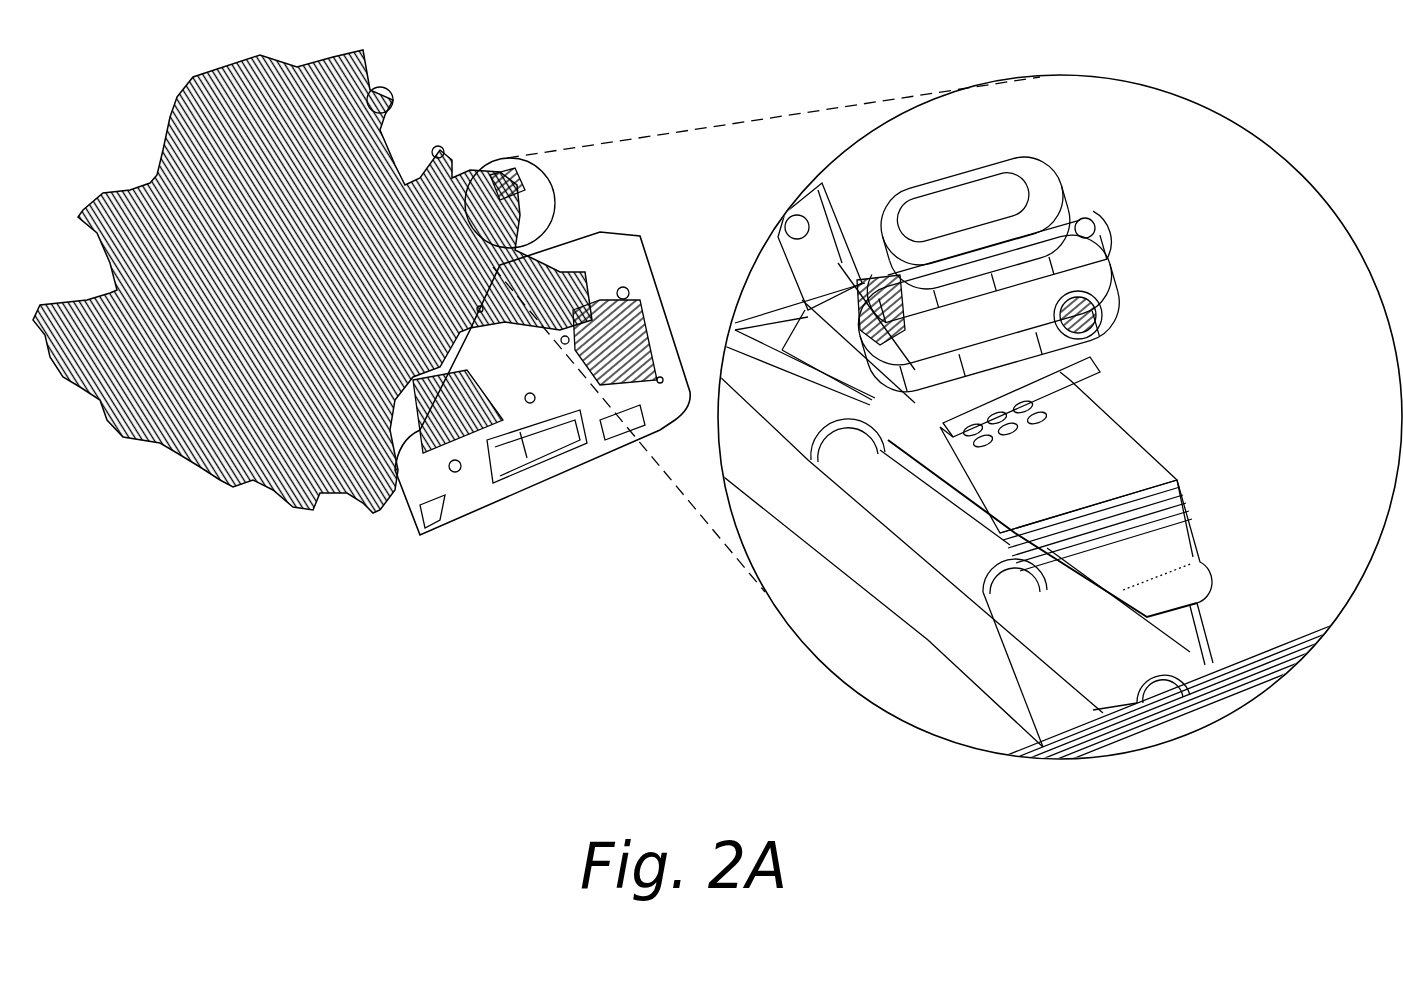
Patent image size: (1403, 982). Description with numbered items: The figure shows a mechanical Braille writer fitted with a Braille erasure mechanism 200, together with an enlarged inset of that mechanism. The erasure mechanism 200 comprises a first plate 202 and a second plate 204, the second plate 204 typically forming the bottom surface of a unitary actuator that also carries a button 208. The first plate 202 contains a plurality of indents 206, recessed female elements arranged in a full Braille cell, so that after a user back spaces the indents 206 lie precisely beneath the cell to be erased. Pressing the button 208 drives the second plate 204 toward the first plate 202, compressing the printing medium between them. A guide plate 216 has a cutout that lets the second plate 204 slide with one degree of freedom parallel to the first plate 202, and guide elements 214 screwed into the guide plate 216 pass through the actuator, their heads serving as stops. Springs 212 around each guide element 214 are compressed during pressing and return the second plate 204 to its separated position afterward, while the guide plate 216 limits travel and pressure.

The Braille erasure mechanism 200 is at (788, 168).
The first plate 202 is at (1107, 439).
The second plate 204 is at (1097, 387).
The plurality of indents 206 is at (1030, 440).
The button 208 is at (1012, 146).
The springs 212 is at (1106, 287).
The guide elements 214 is at (1091, 209).
The guide plate 216 is at (1122, 333).